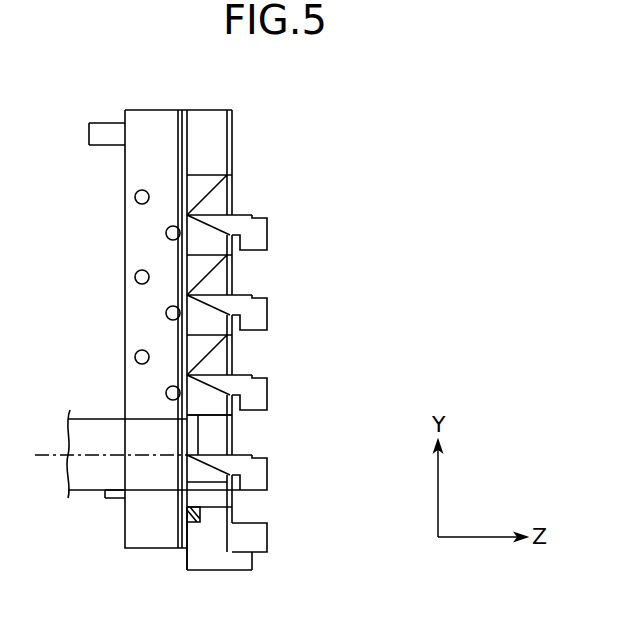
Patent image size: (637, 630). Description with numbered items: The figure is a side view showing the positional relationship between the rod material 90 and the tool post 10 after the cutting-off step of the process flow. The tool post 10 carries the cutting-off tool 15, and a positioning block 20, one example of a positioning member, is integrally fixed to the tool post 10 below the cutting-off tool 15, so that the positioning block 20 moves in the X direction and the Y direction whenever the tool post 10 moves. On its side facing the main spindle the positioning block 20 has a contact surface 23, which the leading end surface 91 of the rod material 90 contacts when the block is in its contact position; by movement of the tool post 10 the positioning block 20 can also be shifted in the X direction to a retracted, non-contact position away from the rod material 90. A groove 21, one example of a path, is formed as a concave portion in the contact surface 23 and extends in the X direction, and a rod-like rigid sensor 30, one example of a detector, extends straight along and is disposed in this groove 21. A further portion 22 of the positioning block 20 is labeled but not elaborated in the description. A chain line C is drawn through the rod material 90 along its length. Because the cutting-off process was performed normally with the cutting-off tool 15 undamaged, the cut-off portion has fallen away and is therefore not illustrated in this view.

The tool post 10 is at (188, 110).
The cutting-off tool 15 is at (215, 423).
The leading end surface 91 is at (193, 441).
The groove 21 is at (190, 508).
The positioning block 20 is at (215, 537).
The protrusion of base 22 is at (210, 557).
The contact surface 23 is at (188, 557).
The sensor 30 is at (189, 514).
The rod material 90 is at (100, 419).
The center axis C is at (55, 455).